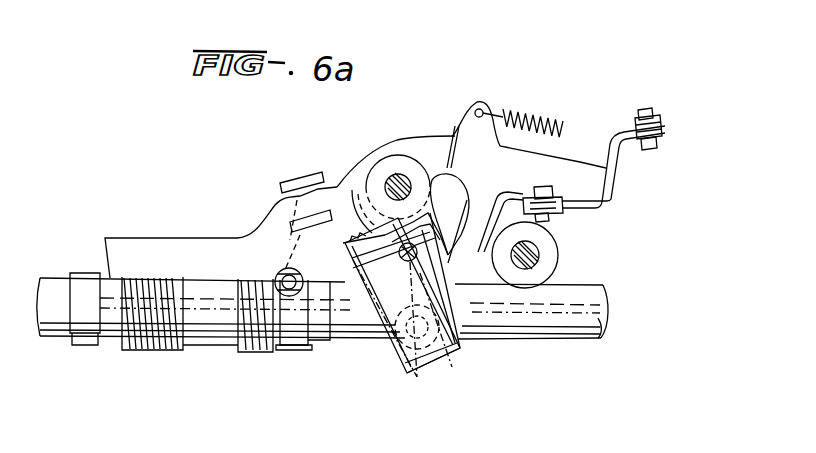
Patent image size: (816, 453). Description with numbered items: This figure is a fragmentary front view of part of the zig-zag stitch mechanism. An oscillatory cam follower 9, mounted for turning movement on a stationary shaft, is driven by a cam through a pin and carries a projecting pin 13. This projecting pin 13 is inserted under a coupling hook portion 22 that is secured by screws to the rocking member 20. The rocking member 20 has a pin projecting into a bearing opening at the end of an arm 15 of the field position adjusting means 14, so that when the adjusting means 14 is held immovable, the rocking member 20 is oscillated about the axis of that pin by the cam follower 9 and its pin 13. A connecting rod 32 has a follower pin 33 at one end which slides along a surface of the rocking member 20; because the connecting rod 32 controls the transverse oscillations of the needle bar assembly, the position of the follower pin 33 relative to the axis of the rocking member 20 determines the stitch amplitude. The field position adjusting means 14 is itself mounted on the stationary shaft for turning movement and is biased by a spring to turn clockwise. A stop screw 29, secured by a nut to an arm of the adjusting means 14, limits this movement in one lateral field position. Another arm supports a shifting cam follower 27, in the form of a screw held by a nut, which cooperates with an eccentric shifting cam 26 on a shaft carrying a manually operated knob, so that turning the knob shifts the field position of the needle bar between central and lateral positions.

The cam follower 9 is at (356, 340).
The projecting pin 13 is at (462, 345).
The field position adjusting means 14 is at (455, 126).
The arm 15 is at (470, 312).
The rocking member 20 is at (418, 362).
The coupling hook portion 22 is at (487, 300).
The eccentric shifting cam 26 is at (542, 267).
The shifting cam follower 27 is at (547, 216).
The stop screw 29 is at (650, 151).
The connecting rod 32 is at (241, 250).
The follower pin 33 is at (443, 355).